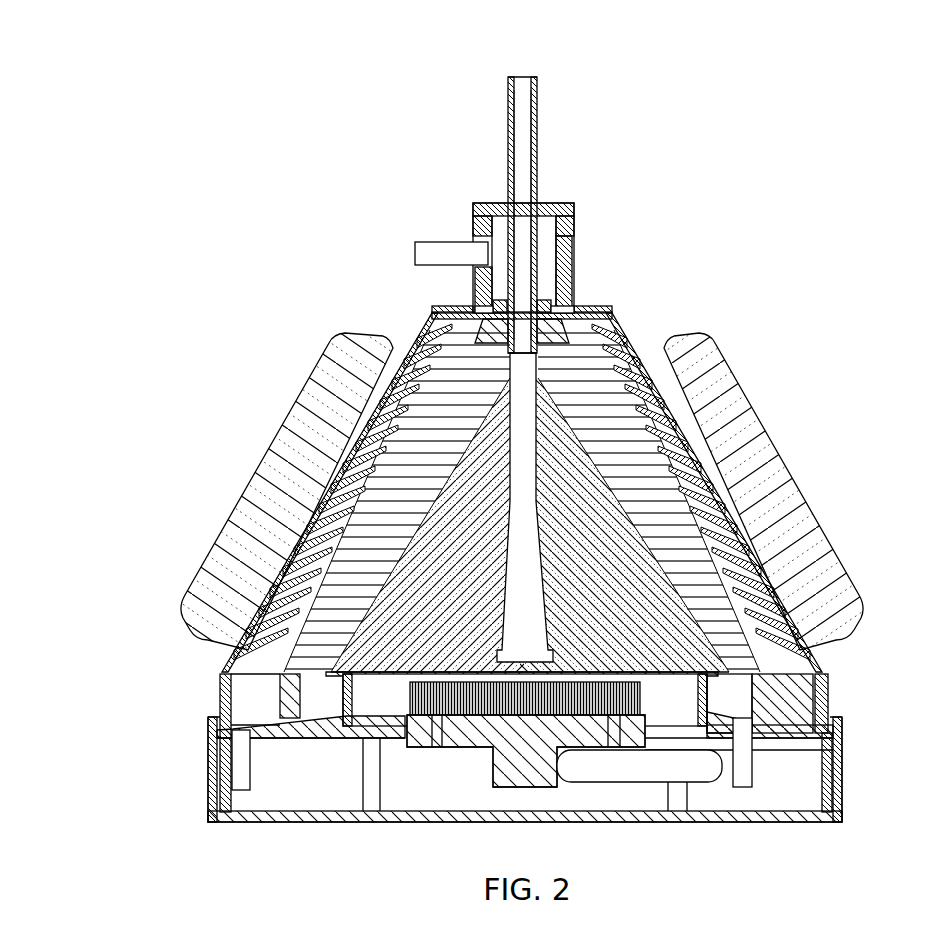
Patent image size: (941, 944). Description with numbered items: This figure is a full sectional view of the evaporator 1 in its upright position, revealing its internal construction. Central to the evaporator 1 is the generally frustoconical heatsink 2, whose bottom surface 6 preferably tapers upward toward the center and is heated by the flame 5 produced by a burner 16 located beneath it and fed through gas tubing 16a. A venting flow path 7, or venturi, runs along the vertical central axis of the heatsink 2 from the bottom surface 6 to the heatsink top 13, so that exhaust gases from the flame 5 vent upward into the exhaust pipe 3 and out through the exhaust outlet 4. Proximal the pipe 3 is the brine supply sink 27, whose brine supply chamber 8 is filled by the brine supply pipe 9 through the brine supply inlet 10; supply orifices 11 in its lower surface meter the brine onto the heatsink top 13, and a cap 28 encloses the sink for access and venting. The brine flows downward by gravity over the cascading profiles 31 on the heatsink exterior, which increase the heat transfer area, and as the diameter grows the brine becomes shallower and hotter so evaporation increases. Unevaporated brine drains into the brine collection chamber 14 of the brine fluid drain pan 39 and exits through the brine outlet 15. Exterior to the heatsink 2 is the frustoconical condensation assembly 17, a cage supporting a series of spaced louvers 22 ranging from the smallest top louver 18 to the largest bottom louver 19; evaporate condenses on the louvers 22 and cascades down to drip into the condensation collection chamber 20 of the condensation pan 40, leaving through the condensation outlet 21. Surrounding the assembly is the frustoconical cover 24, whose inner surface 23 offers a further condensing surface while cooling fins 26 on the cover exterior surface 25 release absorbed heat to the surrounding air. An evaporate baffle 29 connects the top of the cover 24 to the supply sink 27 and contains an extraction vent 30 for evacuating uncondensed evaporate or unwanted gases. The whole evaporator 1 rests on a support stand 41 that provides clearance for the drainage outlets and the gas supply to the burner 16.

The evaporator 1 is at (815, 256).
The heatsink 2 is at (812, 532).
The exhaust pipe 3 is at (538, 148).
The exhaust outlet 4 is at (518, 74).
The flame 5 is at (410, 700).
The bottom surface 6 is at (643, 688).
The venting flow path 7 is at (527, 570).
The brine supply chamber 8 is at (500, 228).
The brine supply pipe 9 is at (478, 238).
The brine supply inlet 10 is at (420, 250).
The supply orifices 11 is at (572, 280).
The heatsink top 13 is at (595, 309).
The brine collection chamber 14 is at (742, 680).
The brine outlet 15 is at (743, 787).
The burner 16 is at (582, 758).
The gas tubing 16a is at (646, 783).
The condensation assembly 17 is at (683, 428).
The top louver 18 is at (632, 338).
The bottom louver 19 is at (242, 657).
The condensation collection chamber 20 is at (236, 700).
The condensation outlet 21 is at (243, 790).
The louvers 22 is at (300, 590).
The inner surface 23 is at (292, 560).
The cover 24 is at (292, 475).
The cover exterior surface 25 is at (330, 500).
The cooling fins 26 is at (797, 477).
The brine supply sink 27 is at (580, 258).
The cap 28 is at (570, 202).
The evaporate baffle 29 is at (455, 309).
The extraction vent 30 is at (480, 308).
The cascading profiles 31 is at (388, 382).
The brine fluid drain pan 39 is at (800, 712).
The condensation pan 40 is at (282, 705).
The support stand 41 is at (212, 826).